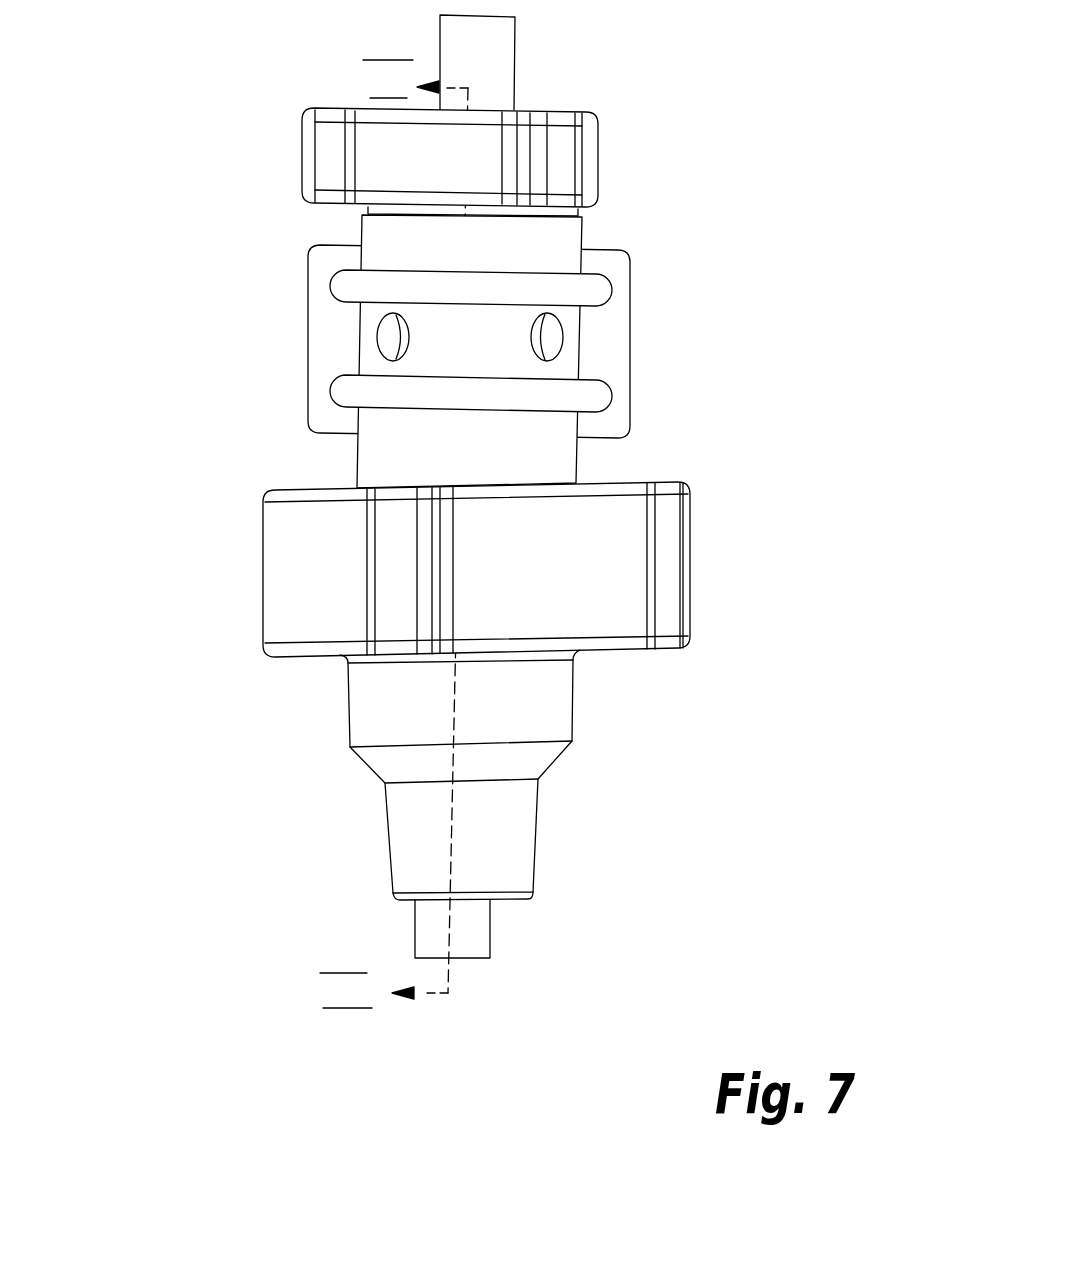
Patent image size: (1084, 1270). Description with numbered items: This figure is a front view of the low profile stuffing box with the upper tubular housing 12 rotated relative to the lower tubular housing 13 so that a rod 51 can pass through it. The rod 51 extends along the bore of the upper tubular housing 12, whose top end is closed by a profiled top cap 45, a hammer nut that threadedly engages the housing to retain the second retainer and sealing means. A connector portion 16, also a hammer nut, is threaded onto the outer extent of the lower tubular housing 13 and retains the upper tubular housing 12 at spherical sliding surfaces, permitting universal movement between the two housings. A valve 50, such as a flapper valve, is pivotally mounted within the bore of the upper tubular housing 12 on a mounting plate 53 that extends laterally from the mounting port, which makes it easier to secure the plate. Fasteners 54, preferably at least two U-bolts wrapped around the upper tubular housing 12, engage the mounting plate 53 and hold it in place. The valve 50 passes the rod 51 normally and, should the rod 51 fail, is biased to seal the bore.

The valve 50 is at (252, 365).
The rod 51 is at (513, 60).
The profiled top cap 45 is at (596, 165).
The fasteners 54 is at (343, 392).
The mounting plate 53 is at (628, 348).
The upper tubular housing 12 is at (575, 462).
The connector portion 16 is at (690, 571).
The lower tubular housing 13 is at (575, 727).